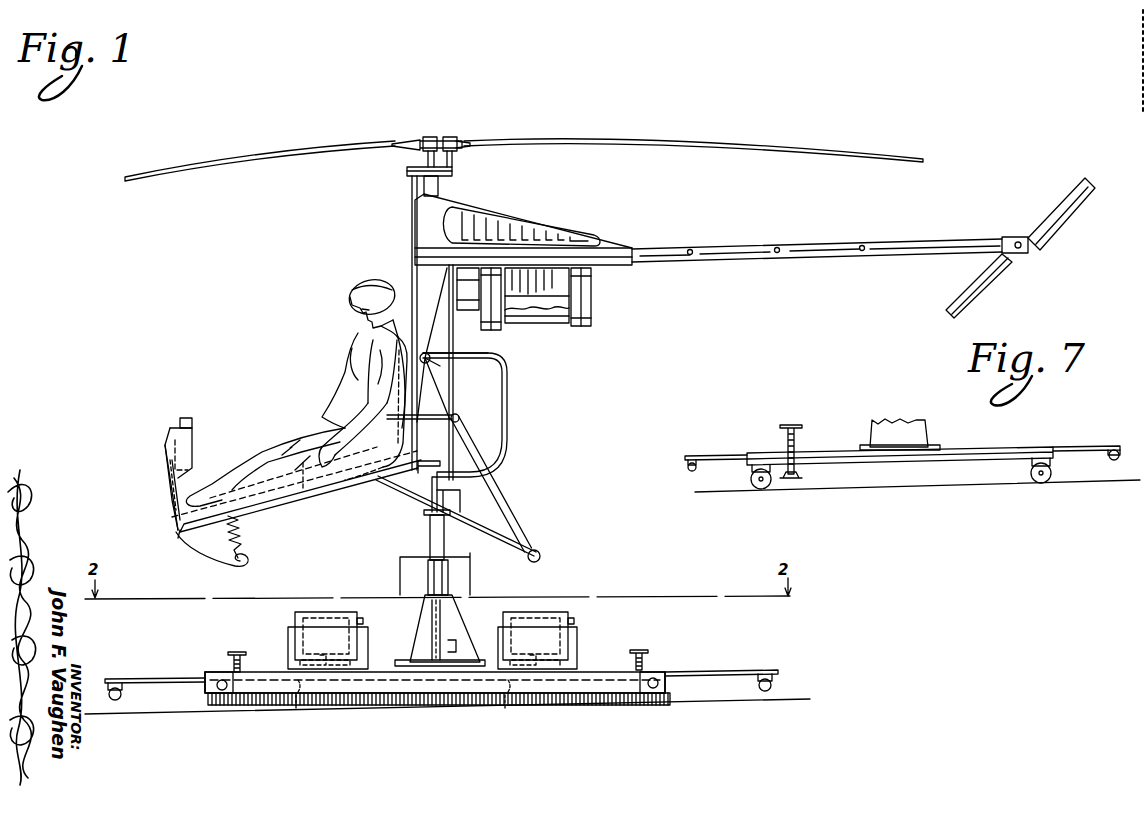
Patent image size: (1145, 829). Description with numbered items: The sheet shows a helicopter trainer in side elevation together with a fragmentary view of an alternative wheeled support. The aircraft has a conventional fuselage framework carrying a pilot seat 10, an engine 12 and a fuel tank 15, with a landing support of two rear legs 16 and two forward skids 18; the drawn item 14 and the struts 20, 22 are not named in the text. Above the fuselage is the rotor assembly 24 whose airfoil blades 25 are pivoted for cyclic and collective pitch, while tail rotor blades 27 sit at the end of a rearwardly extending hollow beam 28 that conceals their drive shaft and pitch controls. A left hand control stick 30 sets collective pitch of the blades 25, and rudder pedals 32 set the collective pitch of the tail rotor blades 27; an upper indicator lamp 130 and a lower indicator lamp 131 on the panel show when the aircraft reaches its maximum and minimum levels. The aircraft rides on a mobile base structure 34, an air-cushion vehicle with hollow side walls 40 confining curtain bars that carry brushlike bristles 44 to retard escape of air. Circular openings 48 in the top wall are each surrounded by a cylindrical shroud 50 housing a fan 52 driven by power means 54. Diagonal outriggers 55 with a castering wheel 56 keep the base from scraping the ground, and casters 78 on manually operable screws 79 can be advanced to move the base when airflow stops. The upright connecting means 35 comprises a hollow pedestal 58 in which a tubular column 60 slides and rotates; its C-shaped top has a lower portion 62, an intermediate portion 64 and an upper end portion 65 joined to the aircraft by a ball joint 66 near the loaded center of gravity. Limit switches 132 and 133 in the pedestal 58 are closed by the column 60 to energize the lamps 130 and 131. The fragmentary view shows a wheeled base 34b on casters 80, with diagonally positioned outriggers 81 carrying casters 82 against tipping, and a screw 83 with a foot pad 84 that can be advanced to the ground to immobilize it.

In FIG. 1, the pilot seat 10 is at (325, 495).
In FIG. 1, the engine 12 is at (530, 322).
In FIG. 1, the power plant assembly 14 is at (596, 298).
In FIG. 1, the fuel tank 15 is at (515, 222).
In FIG. 1, the rear legs 16 is at (522, 545).
In FIG. 1, the forward skids 18 is at (203, 560).
In FIG. 1, the strut 20 is at (500, 496).
In FIG. 1, the spring 22 is at (240, 540).
In FIG. 1, the rotor assembly 24 is at (484, 131).
In FIG. 1, the blades 25 is at (230, 152).
In FIG. 1, the tail rotor blades 27 is at (1066, 190).
In FIG. 1, the hollow beam 28 is at (848, 250).
In FIG. 1, the left hand control stick 30 is at (345, 457).
In FIG. 1, the rudder pedals 32 is at (170, 505).
In FIG. 1, the mobile base structure 34 is at (668, 658).
In FIG. 7, the wheeled base 34b is at (1022, 446).
In FIG. 1, the upright connecting means 35 is at (421, 551).
In FIG. 1, the side walls 40 is at (270, 682).
In FIG. 1, the bristles 44 is at (362, 700).
In FIG. 1, the circular openings 48 is at (296, 702).
In FIG. 1, the cylindrical shroud 50 is at (283, 640).
In FIG. 1, the fan 52 is at (355, 655).
In FIG. 1, the power means 54 is at (315, 612).
In FIG. 1, the diagonal outriggers 55 is at (140, 680).
In FIG. 1, the castering wheel 56 is at (122, 698).
In FIG. 1, the hollow pedestal 58 is at (464, 618).
In FIG. 7, the hollow pedestal 58 is at (925, 434).
In FIG. 1, the tubular column 60 is at (444, 538).
In FIG. 1, the lower portion 62 is at (456, 488).
In FIG. 1, the intermediate portion 64 is at (509, 413).
In FIG. 1, the upper end portion 65 is at (470, 352).
In FIG. 1, the ball joint 66 is at (440, 368).
In FIG. 1, the casters 78 is at (242, 700).
In FIG. 1, the manually operable screws 79 is at (240, 643).
In FIG. 7, the casters 80 is at (752, 486).
In FIG. 7, the outriggers 81 is at (715, 455).
In FIG. 7, the casters 82 is at (1112, 460).
In FIG. 7, the screw 83 is at (778, 435).
In FIG. 7, the foot pad 84 is at (802, 476).
In FIG. 1, the upper indicator lamp 130 is at (195, 425).
In FIG. 1, the lower indicator lamp 131 is at (195, 434).
In FIG. 1, the limit switch 132 is at (458, 598).
In FIG. 1, the limit switch 133 is at (458, 645).